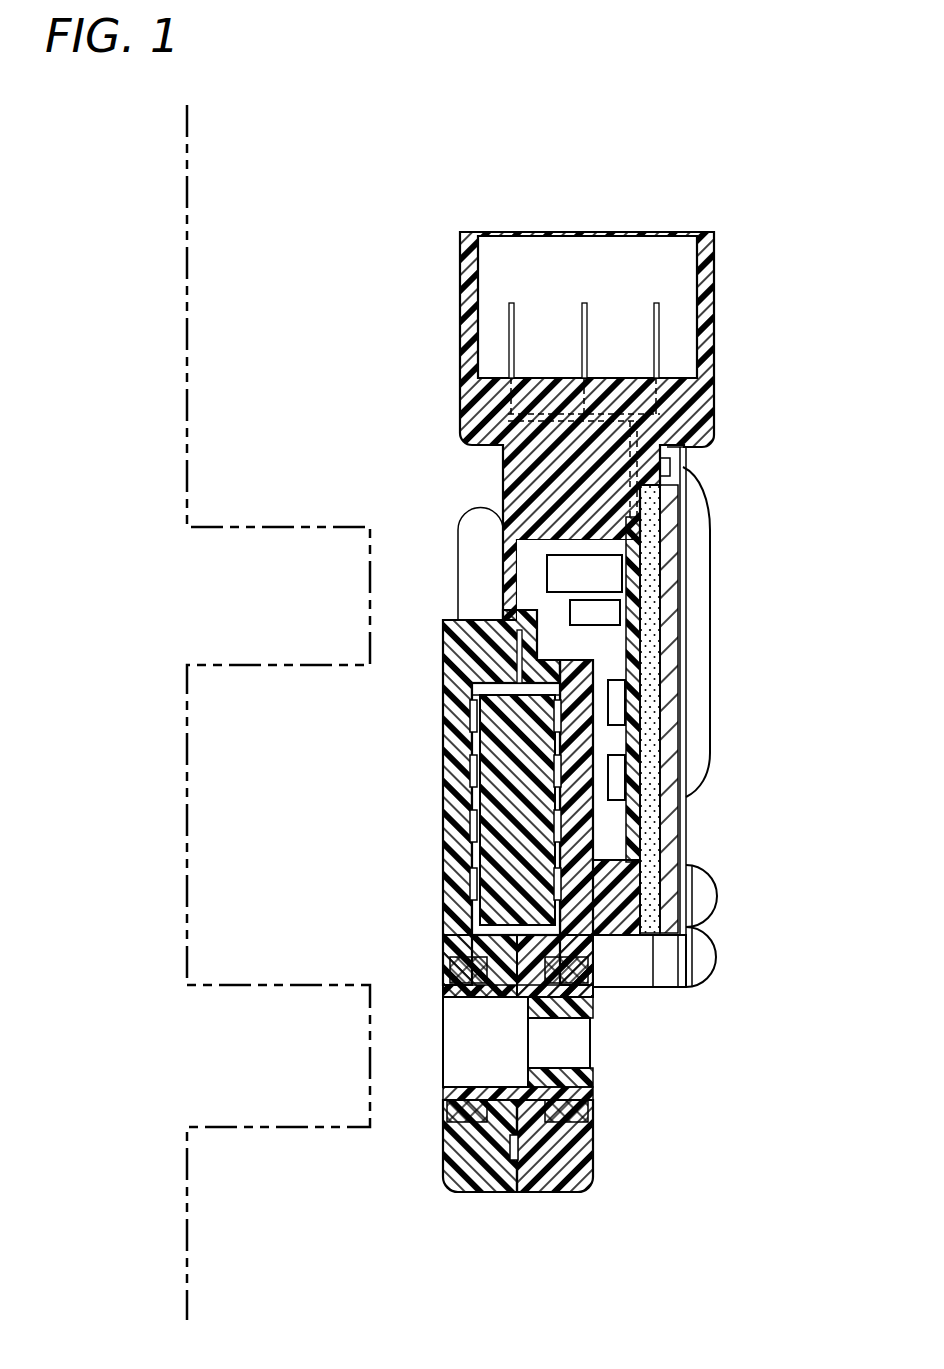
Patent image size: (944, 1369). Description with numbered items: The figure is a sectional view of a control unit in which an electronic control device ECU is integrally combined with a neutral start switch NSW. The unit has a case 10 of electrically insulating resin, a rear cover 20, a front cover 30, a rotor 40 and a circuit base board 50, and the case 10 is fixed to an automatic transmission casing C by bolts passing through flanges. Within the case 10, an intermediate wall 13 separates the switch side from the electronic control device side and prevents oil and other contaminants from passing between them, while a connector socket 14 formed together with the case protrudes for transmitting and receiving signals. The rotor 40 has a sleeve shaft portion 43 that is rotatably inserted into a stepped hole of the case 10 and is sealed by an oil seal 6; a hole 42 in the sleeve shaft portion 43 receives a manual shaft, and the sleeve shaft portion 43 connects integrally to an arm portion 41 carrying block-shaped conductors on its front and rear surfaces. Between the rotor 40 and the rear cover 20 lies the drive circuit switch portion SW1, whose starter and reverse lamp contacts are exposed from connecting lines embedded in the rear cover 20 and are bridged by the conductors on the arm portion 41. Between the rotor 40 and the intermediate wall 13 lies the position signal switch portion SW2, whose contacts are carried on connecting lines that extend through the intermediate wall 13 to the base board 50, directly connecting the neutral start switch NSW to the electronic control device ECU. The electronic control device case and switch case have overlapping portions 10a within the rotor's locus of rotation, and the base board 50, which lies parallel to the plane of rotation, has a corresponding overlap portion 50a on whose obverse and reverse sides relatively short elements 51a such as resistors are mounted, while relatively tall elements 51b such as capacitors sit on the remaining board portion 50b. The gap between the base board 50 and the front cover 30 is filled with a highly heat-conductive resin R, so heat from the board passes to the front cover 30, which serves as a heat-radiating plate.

The connector socket 14 is at (712, 293).
The automatic transmission casing C is at (190, 440).
The case 10 is at (512, 460).
The intermediate wall 13 is at (517, 590).
The relatively tall elements 51b is at (550, 568).
The rear cover 20 is at (455, 640).
The hole 42 is at (467, 1054).
The sleeve shaft portion 43 is at (578, 1005).
The oil seal 6 is at (455, 972).
The rotor 40 is at (478, 896).
The arm portion 41 is at (495, 800).
The position signal switch portion SW2 is at (556, 662).
The drive circuit switch portion SW1 is at (470, 686).
The neutral start switch NSW is at (472, 870).
The overlapping portions 10a is at (580, 840).
The circuit base board 50 is at (645, 545).
The board portion 50b is at (640, 600).
The overlap portion 50a is at (618, 778).
The electronic control device ECU is at (650, 640).
The relatively short elements 51a is at (660, 700).
The highly heat-conductive resin R is at (645, 500).
The front cover 30 is at (672, 847).